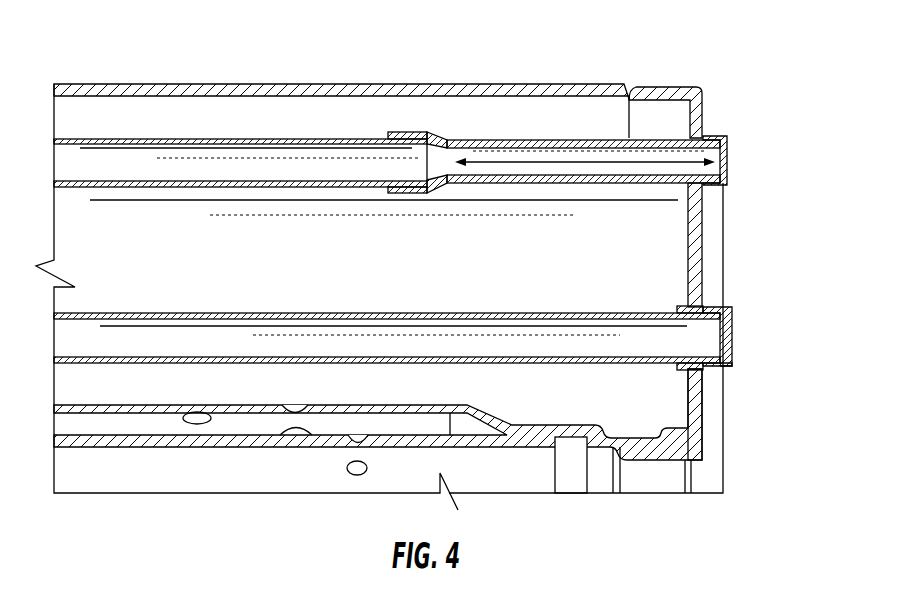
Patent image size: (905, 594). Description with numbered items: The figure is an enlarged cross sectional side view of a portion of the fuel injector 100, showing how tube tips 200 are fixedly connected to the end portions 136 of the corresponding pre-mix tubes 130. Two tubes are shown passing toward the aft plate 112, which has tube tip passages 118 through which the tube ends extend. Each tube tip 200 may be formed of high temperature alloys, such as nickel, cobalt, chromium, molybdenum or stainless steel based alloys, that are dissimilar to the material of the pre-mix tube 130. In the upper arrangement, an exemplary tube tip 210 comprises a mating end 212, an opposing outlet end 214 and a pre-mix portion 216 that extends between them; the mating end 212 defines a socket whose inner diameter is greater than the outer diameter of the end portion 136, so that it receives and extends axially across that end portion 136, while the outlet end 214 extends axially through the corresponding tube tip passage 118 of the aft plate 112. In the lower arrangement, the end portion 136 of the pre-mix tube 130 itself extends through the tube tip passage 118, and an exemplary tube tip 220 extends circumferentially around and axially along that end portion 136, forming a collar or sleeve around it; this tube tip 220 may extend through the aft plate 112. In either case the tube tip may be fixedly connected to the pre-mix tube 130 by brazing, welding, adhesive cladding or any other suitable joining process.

The fuel injector 100 is at (542, 43).
The aft plate 112 is at (697, 404).
The tube tip passage 118 is at (702, 137).
The pre-mix tube 130 is at (223, 187).
The end portion 136 is at (377, 190).
The tube tip 200 is at (718, 131).
The tube tip 210 is at (548, 189).
The mating end 212 is at (424, 202).
The outlet end 214 is at (707, 187).
The pre-mix portion 216 is at (567, 160).
The tube tip 220 is at (725, 377).